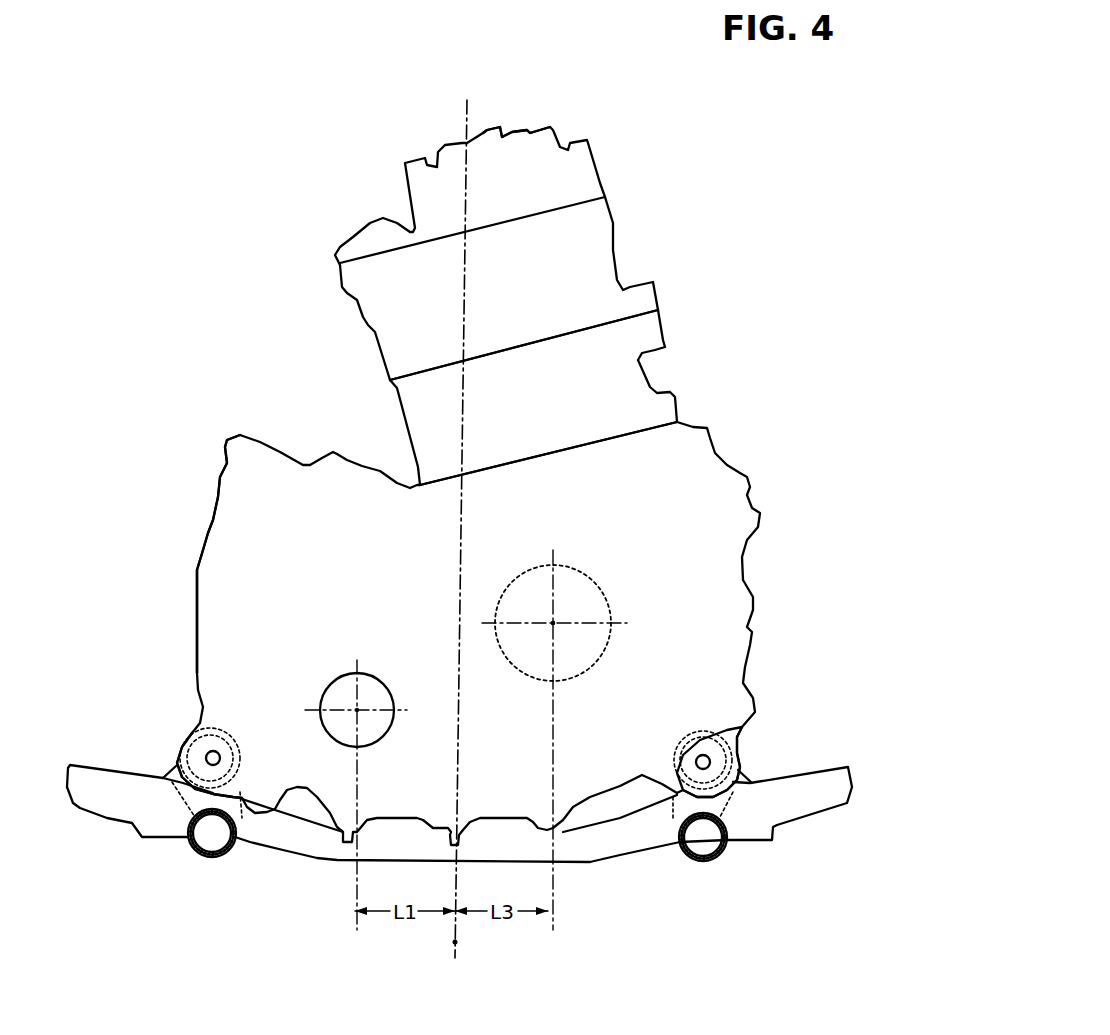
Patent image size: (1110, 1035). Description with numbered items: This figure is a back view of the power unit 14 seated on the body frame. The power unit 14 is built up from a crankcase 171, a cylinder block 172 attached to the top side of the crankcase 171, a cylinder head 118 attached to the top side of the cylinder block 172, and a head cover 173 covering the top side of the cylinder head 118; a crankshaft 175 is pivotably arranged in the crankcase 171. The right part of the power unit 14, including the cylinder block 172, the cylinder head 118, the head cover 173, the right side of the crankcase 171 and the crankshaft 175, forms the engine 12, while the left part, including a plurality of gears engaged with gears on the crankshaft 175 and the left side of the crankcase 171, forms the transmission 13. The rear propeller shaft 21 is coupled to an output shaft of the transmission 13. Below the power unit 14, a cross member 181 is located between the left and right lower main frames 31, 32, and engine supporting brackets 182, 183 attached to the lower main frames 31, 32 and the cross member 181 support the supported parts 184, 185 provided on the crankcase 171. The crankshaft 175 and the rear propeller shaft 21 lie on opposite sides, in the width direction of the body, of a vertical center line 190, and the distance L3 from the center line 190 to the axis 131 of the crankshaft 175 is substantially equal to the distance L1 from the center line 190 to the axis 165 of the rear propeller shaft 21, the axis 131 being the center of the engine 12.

The power unit 14 is at (615, 221).
The head cover 173 is at (534, 145).
The cylinder head 118 is at (603, 270).
The cylinder block 172 is at (632, 382).
The engine 12 is at (752, 483).
The crankcase 171 is at (220, 565).
The transmission 13 is at (194, 625).
The axis of the rear propeller shaft 165 is at (357, 710).
The rear propeller shaft 21 is at (330, 685).
The crankshaft 175 is at (601, 588).
The axis of the crankshaft 131 is at (553, 623).
The supported part 184 is at (197, 737).
The supported part 185 is at (721, 730).
The cross member 181 is at (300, 847).
The engine supporting bracket 182 is at (187, 795).
The engine supporting bracket 183 is at (740, 793).
The lower main frame 31 is at (207, 858).
The lower main frame 32 is at (708, 860).
The center line 190 is at (455, 942).